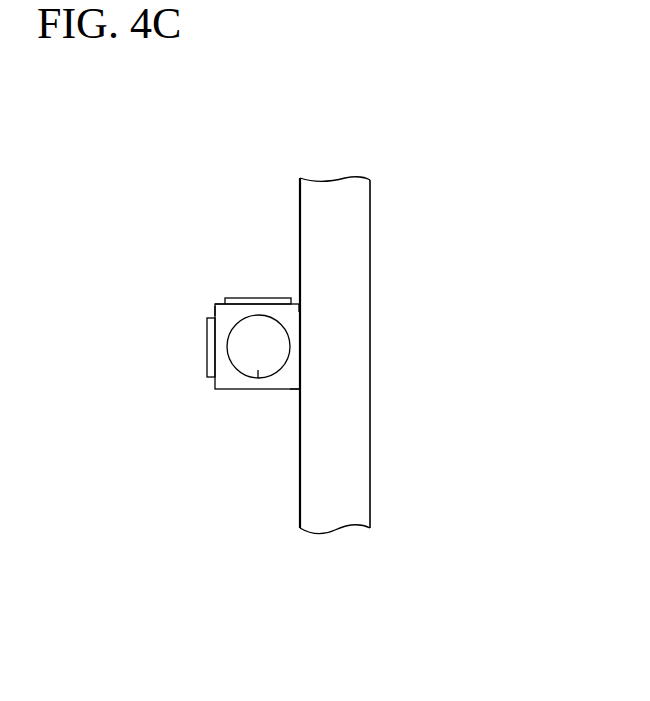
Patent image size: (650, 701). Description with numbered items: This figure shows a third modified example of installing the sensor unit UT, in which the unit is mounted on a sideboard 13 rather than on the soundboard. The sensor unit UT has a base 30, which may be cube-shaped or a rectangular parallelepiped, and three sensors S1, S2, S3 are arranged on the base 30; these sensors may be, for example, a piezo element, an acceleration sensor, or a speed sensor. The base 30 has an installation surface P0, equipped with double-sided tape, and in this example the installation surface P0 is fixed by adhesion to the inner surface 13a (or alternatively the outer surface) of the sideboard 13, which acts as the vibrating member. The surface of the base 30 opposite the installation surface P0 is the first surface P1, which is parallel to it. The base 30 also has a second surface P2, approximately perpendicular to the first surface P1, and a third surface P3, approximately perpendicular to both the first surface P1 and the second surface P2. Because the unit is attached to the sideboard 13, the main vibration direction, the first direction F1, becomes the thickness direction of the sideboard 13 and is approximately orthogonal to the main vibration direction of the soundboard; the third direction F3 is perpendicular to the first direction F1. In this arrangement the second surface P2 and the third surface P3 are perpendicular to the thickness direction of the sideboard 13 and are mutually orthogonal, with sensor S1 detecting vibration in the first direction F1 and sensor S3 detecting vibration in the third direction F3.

The sideboard 13 is at (360, 240).
The inner surface 13a is at (298, 304).
The base 30 is at (215, 304).
The installation surface P0 is at (292, 347).
The first surface P1 is at (215, 310).
The second surface P2 is at (287, 393).
The third surface P3 is at (222, 302).
The sensor S1 is at (208, 346).
The sensor S2 is at (258, 370).
The sensor S3 is at (259, 298).
The sensor unit UT is at (213, 393).
The first direction F1 is at (310, 130).
The third direction F3 is at (335, 157).